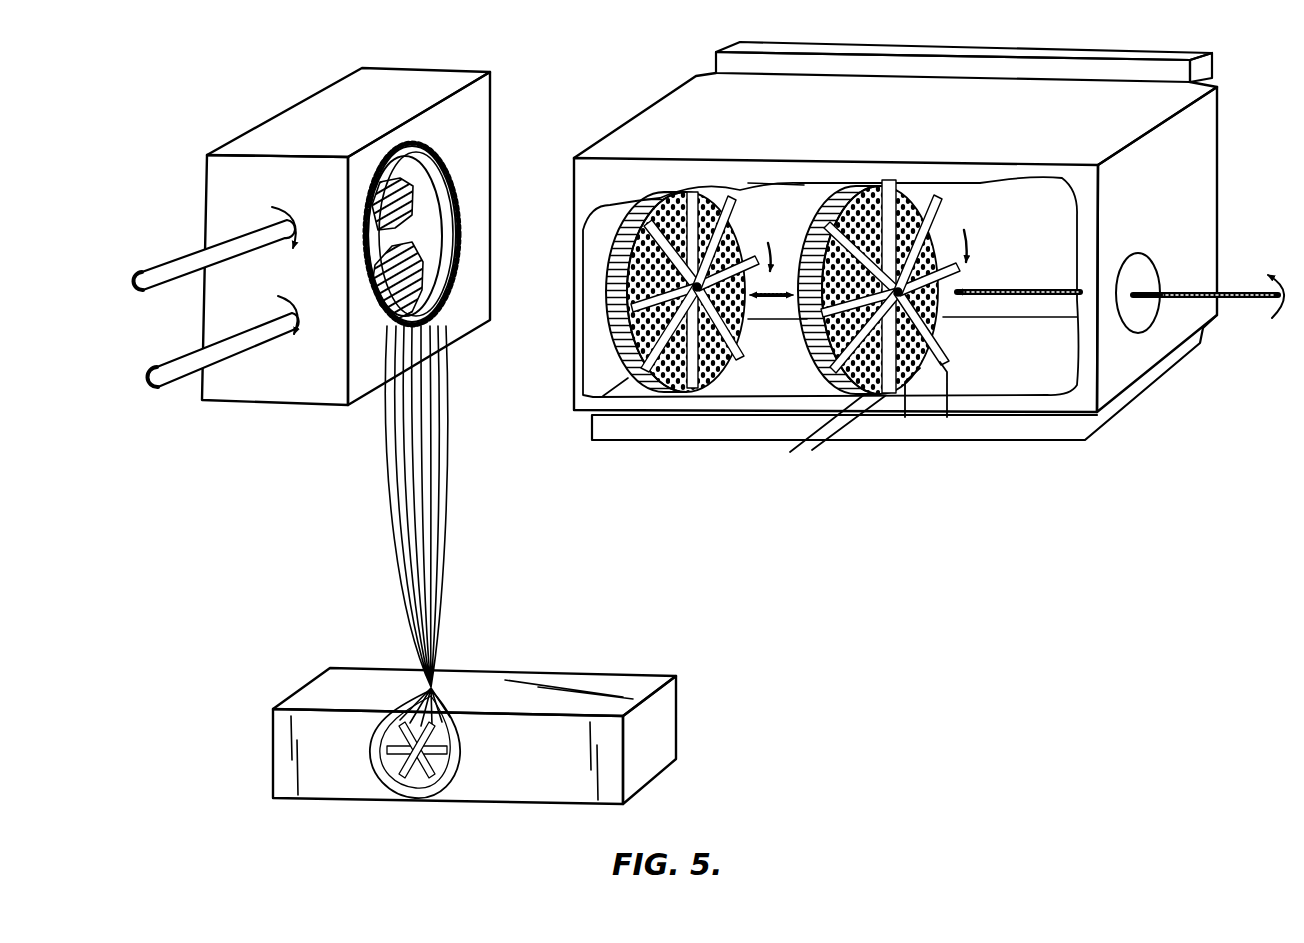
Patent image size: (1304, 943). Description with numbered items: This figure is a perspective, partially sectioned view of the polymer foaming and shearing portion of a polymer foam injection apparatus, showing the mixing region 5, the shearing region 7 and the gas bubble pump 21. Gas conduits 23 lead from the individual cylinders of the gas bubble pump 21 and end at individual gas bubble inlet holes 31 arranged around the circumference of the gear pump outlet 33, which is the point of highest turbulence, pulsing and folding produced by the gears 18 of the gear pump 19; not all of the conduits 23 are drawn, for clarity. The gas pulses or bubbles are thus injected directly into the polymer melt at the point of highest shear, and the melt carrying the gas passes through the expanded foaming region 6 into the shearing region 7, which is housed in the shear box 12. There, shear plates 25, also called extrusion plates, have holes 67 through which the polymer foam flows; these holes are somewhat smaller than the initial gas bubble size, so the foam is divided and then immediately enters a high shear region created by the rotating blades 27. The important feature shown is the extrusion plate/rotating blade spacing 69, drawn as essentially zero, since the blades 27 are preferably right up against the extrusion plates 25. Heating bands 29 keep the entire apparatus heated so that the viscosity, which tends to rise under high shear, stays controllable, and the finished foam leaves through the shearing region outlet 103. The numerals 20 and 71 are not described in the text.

The mixing region 5 is at (281, 63).
The expanded foaming region 6 is at (367, 668).
The shearing region 7 is at (895, 43).
The shear box 12 is at (658, 112).
The gears 18 is at (412, 188).
The gear pump 19 is at (400, 67).
The feed rods 20 is at (151, 272).
The gas bubble pump 21 is at (529, 665).
The gas conduits 23 is at (392, 484).
The extrusion plates 25 is at (628, 397).
The rotating blades 27 is at (677, 397).
The heating bands 29 is at (1055, 70).
The gas bubble inlet holes 31 is at (413, 243).
The gear pump outlet 33 is at (437, 182).
The holes 67 is at (736, 234).
The extrusion plate/rotating blade spacing 69 is at (815, 453).
The drive shaft 71 is at (1007, 287).
The shearing region outlet 103 is at (1147, 263).